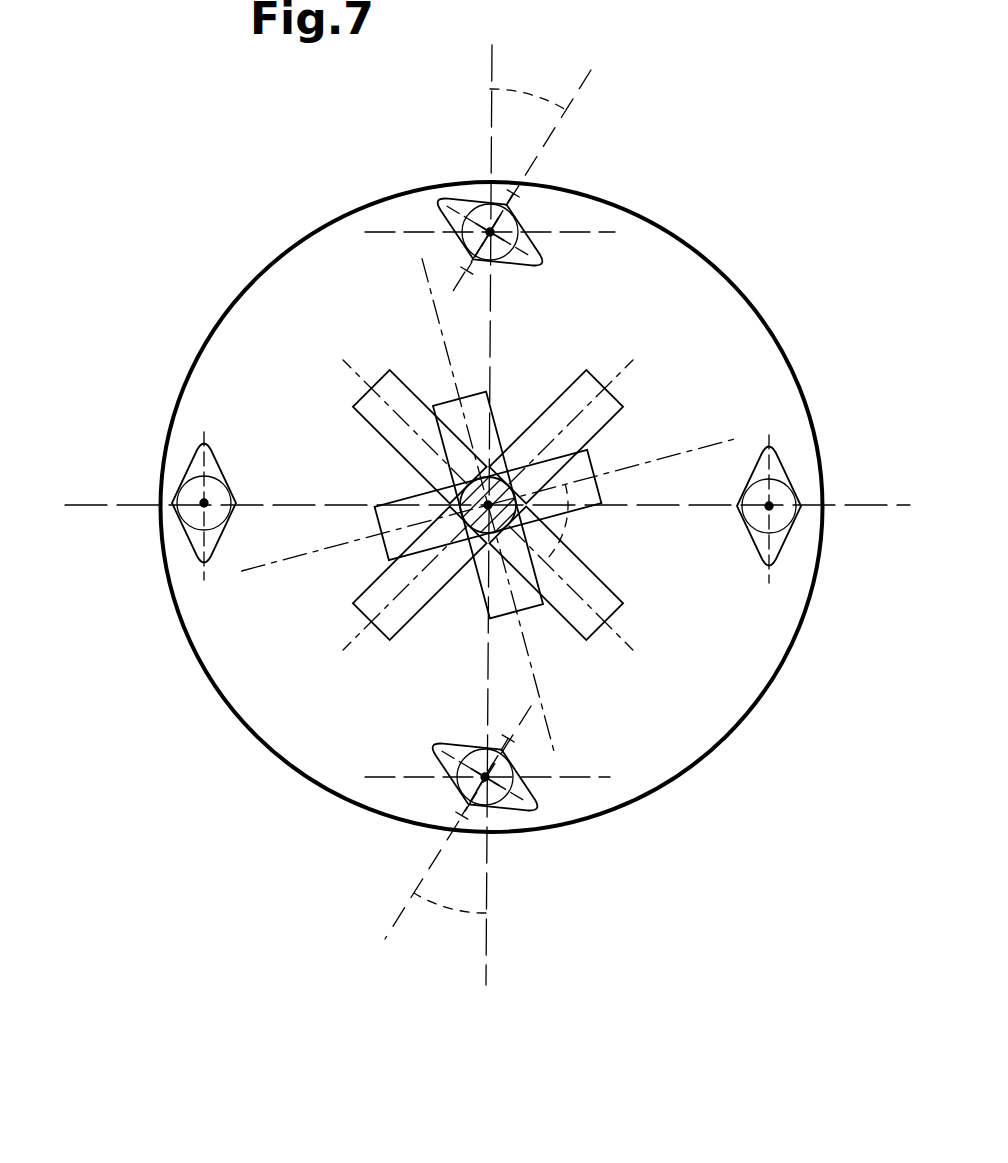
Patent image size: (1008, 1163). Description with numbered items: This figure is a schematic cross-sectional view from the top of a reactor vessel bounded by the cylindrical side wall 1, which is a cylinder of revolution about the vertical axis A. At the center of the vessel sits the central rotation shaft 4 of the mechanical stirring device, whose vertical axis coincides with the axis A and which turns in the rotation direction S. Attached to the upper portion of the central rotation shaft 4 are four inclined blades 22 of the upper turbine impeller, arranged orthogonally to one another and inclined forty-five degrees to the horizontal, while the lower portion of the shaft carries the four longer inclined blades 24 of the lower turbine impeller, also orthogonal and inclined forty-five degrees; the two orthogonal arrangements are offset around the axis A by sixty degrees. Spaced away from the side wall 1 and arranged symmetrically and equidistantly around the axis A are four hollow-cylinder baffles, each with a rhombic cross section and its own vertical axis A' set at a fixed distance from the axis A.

The side wall 1 is at (776, 334).
The central rotation shaft 4 is at (488, 532).
The inclined blades 22 is at (488, 440).
The inclined blades 24 is at (405, 392).
The vertical axis A is at (410, 478).
The vertical axis of baffle A' is at (485, 505).
The rotation direction S is at (470, 328).